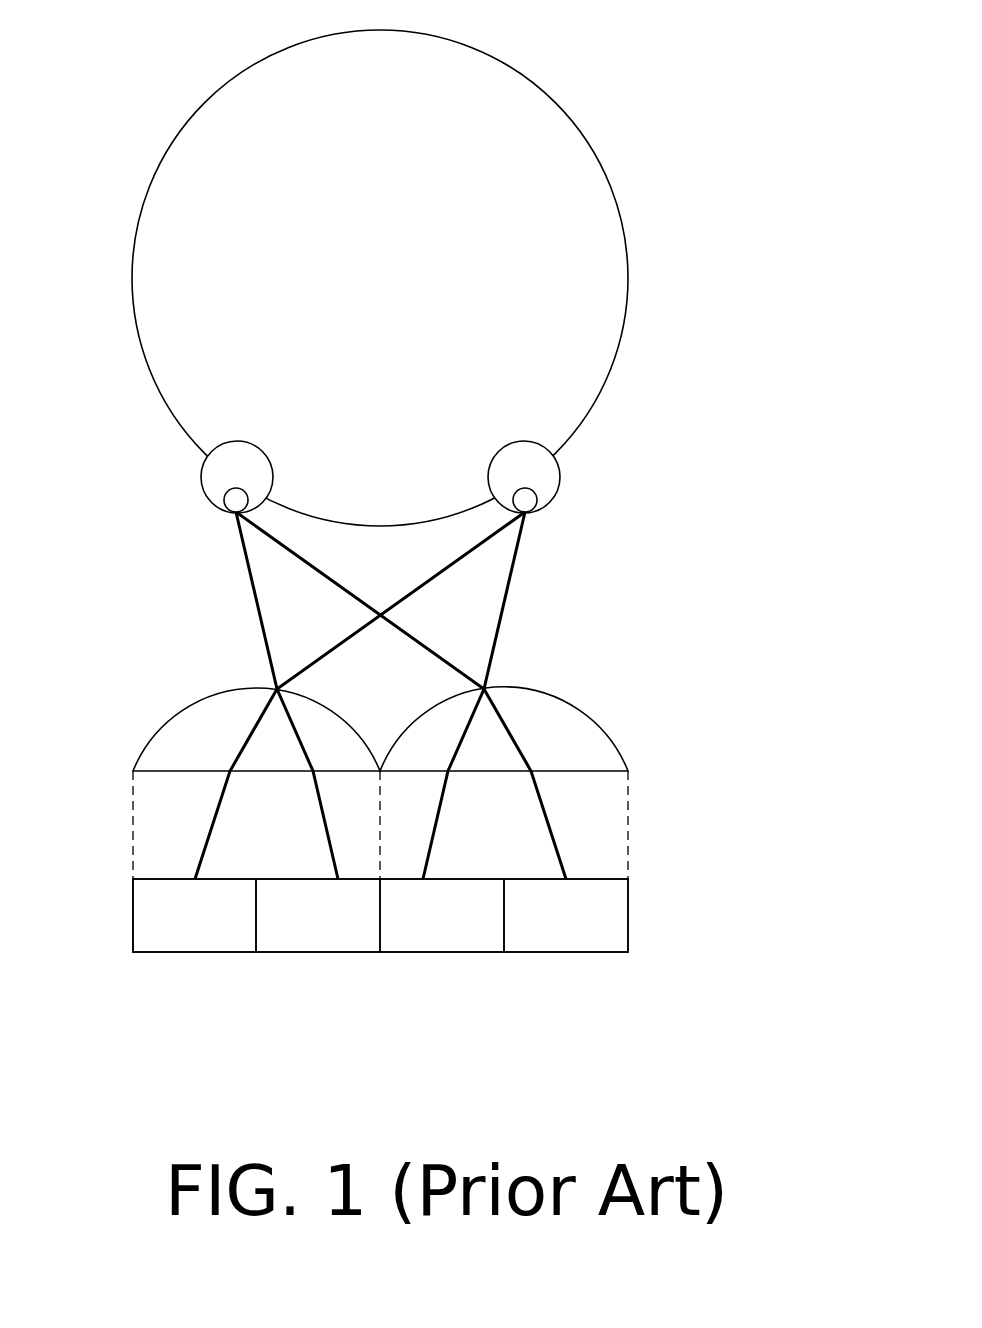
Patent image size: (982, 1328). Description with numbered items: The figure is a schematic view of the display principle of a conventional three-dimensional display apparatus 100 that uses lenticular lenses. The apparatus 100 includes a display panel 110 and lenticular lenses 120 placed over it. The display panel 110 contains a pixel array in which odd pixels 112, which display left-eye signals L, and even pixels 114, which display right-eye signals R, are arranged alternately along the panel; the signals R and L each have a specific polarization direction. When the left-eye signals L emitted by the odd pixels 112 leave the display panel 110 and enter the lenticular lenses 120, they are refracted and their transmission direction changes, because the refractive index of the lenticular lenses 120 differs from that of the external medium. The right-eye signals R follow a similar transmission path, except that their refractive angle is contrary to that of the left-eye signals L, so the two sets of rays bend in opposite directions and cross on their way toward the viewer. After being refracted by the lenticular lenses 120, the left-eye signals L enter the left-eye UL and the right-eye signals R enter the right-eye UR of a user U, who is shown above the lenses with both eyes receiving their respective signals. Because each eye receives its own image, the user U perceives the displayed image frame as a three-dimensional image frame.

The user U is at (625, 240).
The right-eye UR is at (200, 480).
The left-eye UL is at (560, 477).
The right-eye signals R is at (255, 605).
The left-eye signals L is at (250, 730).
The 3D display apparatus 100 is at (471, 879).
The display panel 110 is at (628, 913).
The odd pixels 112 is at (195, 937).
The even pixels 114 is at (318, 937).
The lenticular lenses 120 is at (612, 735).